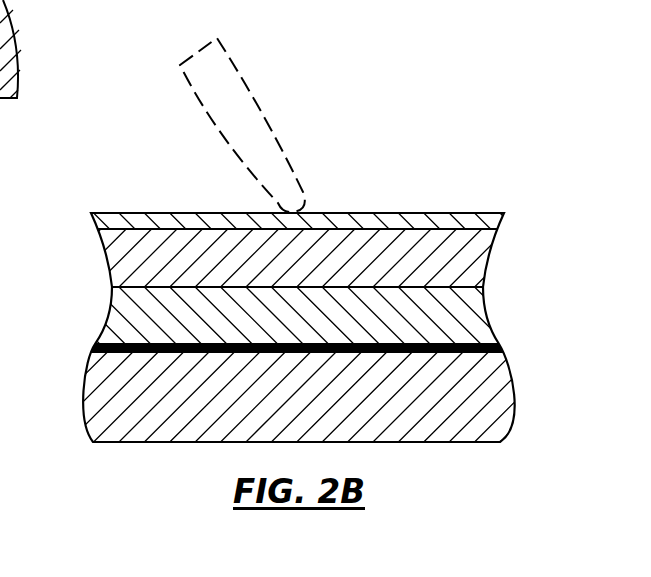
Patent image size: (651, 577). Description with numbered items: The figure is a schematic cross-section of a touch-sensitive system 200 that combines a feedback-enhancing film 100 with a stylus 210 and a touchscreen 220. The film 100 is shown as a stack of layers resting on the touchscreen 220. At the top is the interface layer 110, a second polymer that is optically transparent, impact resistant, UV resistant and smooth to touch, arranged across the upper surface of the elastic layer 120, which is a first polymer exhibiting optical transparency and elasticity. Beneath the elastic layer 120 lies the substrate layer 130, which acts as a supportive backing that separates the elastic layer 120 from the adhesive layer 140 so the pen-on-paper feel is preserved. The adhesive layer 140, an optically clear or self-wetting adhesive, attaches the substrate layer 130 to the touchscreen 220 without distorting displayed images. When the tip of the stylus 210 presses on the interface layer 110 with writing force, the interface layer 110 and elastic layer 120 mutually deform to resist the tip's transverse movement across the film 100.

The feedback-enhancing film 100 is at (459, 207).
The interface layer 110 is at (137, 220).
The elastic layer 120 is at (140, 266).
The substrate layer 130 is at (138, 317).
The adhesive layer 140 is at (94, 346).
The system 200 is at (424, 136).
The stylus 210 is at (242, 125).
The touchscreen 220 is at (147, 415).